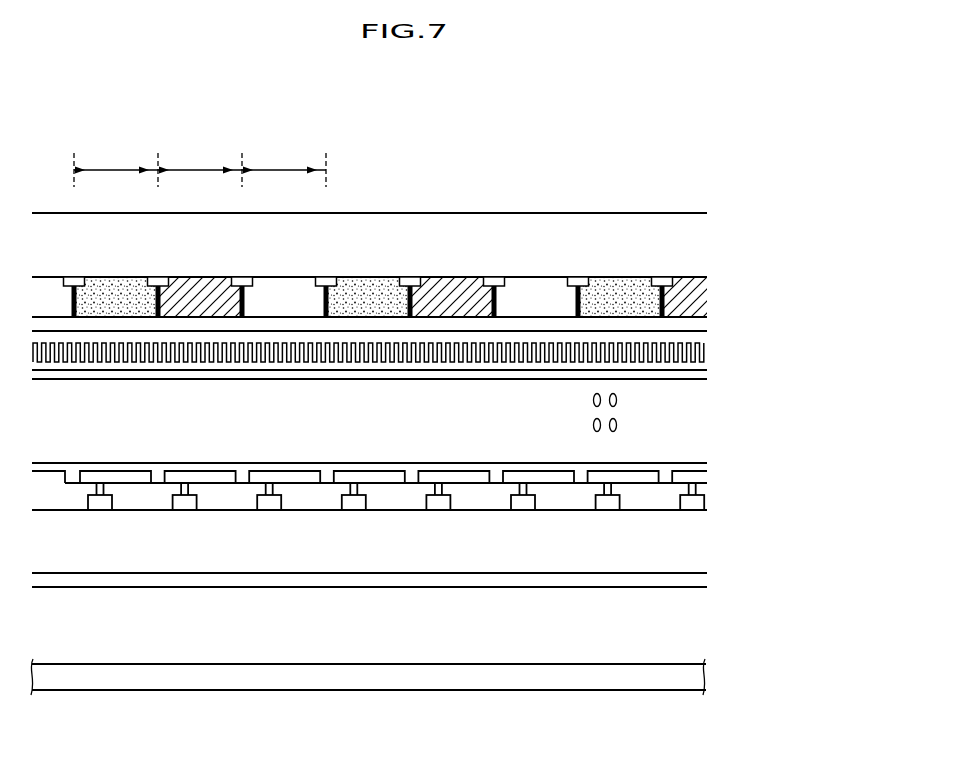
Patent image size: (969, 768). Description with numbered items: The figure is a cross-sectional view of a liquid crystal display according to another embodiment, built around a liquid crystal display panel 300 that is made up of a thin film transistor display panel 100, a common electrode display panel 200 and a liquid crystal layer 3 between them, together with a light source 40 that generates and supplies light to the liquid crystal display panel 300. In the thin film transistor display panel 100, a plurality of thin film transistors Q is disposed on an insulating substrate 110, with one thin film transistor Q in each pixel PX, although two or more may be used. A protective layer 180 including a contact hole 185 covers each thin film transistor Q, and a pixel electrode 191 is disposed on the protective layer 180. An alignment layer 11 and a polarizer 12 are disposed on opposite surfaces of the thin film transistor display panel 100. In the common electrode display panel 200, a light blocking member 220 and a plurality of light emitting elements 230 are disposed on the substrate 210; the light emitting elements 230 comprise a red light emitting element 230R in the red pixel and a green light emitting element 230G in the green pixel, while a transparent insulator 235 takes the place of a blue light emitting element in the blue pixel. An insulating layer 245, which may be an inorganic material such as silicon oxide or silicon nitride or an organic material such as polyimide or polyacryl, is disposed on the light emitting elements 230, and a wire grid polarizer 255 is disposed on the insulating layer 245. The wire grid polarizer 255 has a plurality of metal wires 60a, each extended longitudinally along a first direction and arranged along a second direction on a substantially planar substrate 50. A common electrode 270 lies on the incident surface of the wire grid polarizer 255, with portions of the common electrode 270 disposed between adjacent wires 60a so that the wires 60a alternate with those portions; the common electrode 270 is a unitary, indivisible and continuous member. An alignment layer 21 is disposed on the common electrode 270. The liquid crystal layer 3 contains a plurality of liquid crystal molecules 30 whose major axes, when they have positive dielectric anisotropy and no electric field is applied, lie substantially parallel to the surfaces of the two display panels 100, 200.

The liquid crystal display panel 300 is at (752, 228).
The common electrode display panel 200 is at (717, 213).
The substrate 210 is at (605, 225).
The light blocking member 220 is at (490, 282).
The light emitting element 230 is at (347, 158).
The red light emitting element 230R is at (352, 288).
The green light emitting element 230G is at (432, 288).
The transparent insulator 235 is at (543, 298).
The insulating layer 245 is at (88, 327).
The common electrode 270 is at (203, 364).
The wire grid polarizer 255 is at (480, 413).
The metal wires 60a is at (424, 363).
The substrate 50 is at (475, 338).
The alignment layer 21 is at (673, 376).
The liquid crystal layer 3 is at (713, 398).
The liquid crystal molecules 30 is at (618, 400).
The thin film transistor display panel 100 is at (717, 463).
The alignment layer 11 is at (674, 468).
The pixel electrode 191 is at (306, 478).
The contact hole 185 is at (353, 492).
The protective layer 180 is at (226, 500).
The thin film transistor Q is at (100, 503).
The insulating substrate 110 is at (492, 553).
The polarizer 12 is at (580, 580).
The light source 40 is at (713, 660).
The pixel PX is at (104, 135).